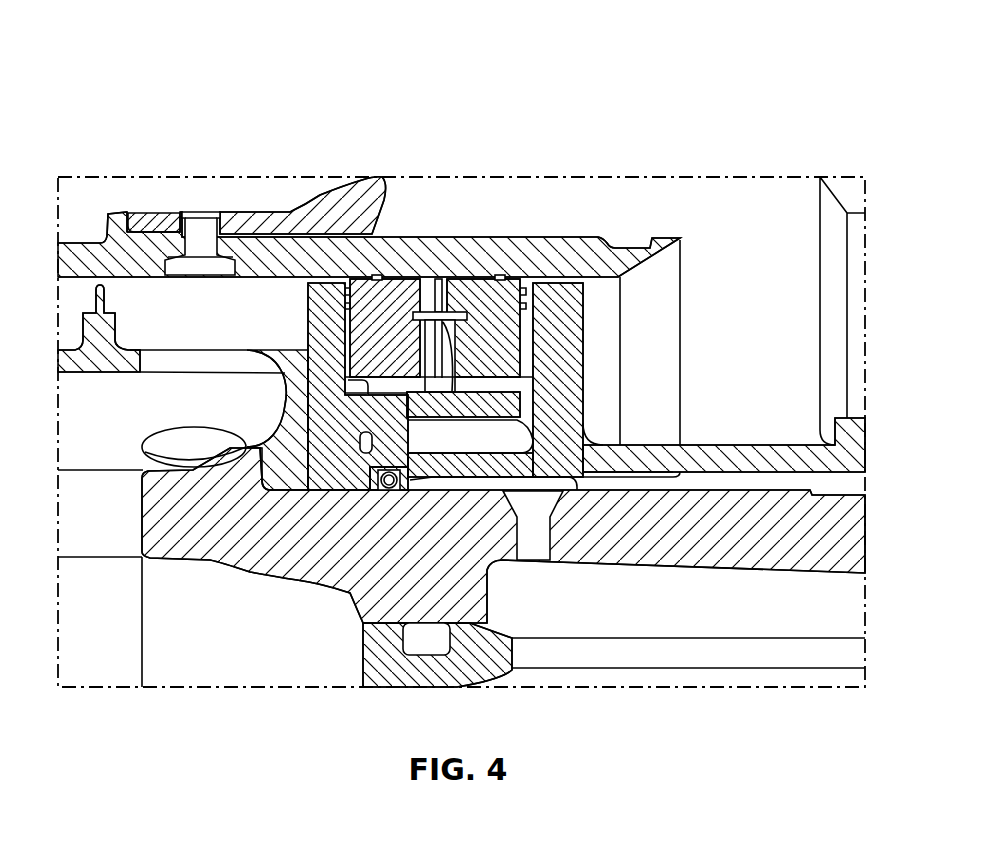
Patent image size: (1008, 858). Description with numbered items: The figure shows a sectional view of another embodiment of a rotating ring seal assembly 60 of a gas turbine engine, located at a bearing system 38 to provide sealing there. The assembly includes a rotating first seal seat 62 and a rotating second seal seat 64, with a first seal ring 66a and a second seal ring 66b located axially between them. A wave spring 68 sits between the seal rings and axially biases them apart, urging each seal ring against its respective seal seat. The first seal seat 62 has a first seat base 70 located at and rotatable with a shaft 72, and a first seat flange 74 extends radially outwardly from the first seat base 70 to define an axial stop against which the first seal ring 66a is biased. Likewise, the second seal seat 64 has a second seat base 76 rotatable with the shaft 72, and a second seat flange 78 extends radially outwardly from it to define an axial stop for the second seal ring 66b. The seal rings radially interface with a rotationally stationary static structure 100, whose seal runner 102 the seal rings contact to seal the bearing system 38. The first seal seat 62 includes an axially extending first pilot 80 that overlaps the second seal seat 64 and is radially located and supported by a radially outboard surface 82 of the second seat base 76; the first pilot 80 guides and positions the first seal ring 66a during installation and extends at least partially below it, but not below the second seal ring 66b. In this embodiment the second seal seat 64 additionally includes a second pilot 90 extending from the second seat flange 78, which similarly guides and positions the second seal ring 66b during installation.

The ring seal assembly 60 is at (133, 58).
The seal runner 102 is at (268, 248).
The static structure 100 is at (455, 205).
The first seal ring 66a is at (373, 337).
The second seal ring 66b is at (504, 337).
The wave spring 68 is at (433, 323).
The second seat flange 78 is at (555, 300).
The bearing system 38 is at (768, 318).
The second pilot 90 is at (488, 398).
The second seal seat 64 is at (580, 423).
The first seat flange 74 is at (352, 320).
The first pilot 80 is at (360, 365).
The first seal seat 62 is at (330, 395).
The first seat base 70 is at (333, 455).
The radially outboard surface 82 is at (408, 482).
The second seat base 76 is at (453, 467).
The shaft 72 is at (711, 613).